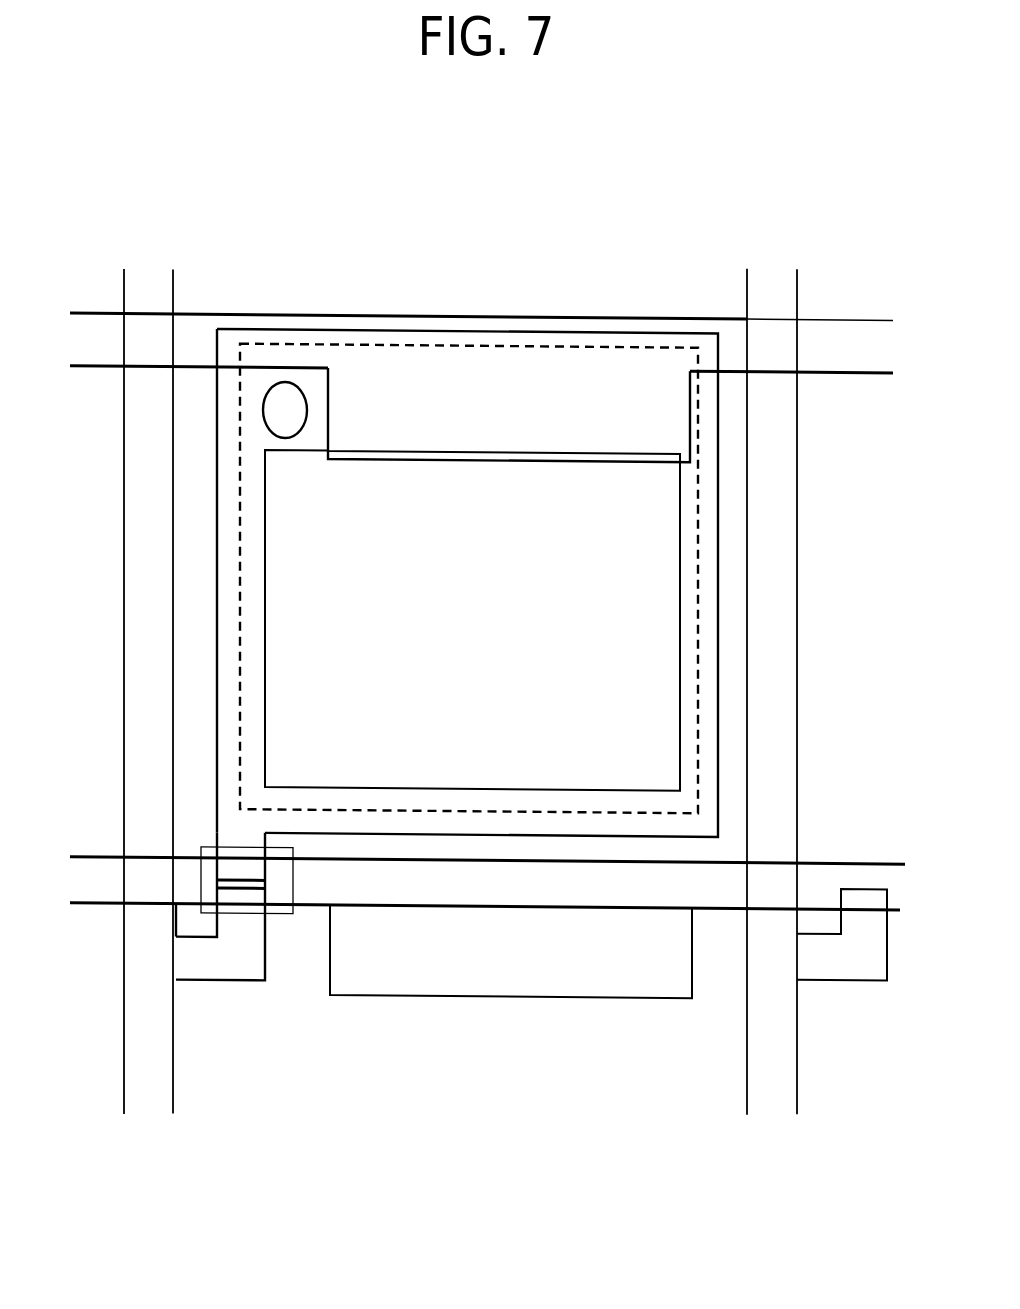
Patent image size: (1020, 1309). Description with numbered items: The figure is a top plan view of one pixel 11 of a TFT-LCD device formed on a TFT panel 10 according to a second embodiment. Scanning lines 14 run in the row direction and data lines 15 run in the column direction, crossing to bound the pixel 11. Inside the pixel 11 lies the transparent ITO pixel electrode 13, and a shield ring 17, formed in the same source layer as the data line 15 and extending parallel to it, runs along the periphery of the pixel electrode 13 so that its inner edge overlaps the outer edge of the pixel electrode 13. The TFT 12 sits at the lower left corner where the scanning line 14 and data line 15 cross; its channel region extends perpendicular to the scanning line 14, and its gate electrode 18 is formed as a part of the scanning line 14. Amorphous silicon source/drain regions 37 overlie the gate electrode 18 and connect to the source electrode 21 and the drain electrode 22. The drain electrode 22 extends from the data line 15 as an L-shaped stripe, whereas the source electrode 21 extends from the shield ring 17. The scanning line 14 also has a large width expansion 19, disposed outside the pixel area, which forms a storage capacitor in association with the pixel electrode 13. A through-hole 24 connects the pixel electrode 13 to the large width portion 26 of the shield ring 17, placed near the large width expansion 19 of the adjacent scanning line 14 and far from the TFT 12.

The TFT panel 10 is at (655, 183).
The pixel 11 is at (565, 292).
The TFT 12 is at (248, 833).
The pixel electrode 13 is at (652, 341).
The scanning line 14 is at (836, 313).
The data line 15 is at (124, 440).
The shield ring 17 is at (718, 684).
The gate electrode 18 is at (193, 901).
The large width expansion 19 is at (412, 456).
The source electrode 21 is at (218, 825).
The drain electrode 22 is at (238, 923).
The through-hole 24 is at (285, 380).
The large width portion 26 is at (612, 455).
The source/drain regions 37 is at (293, 882).